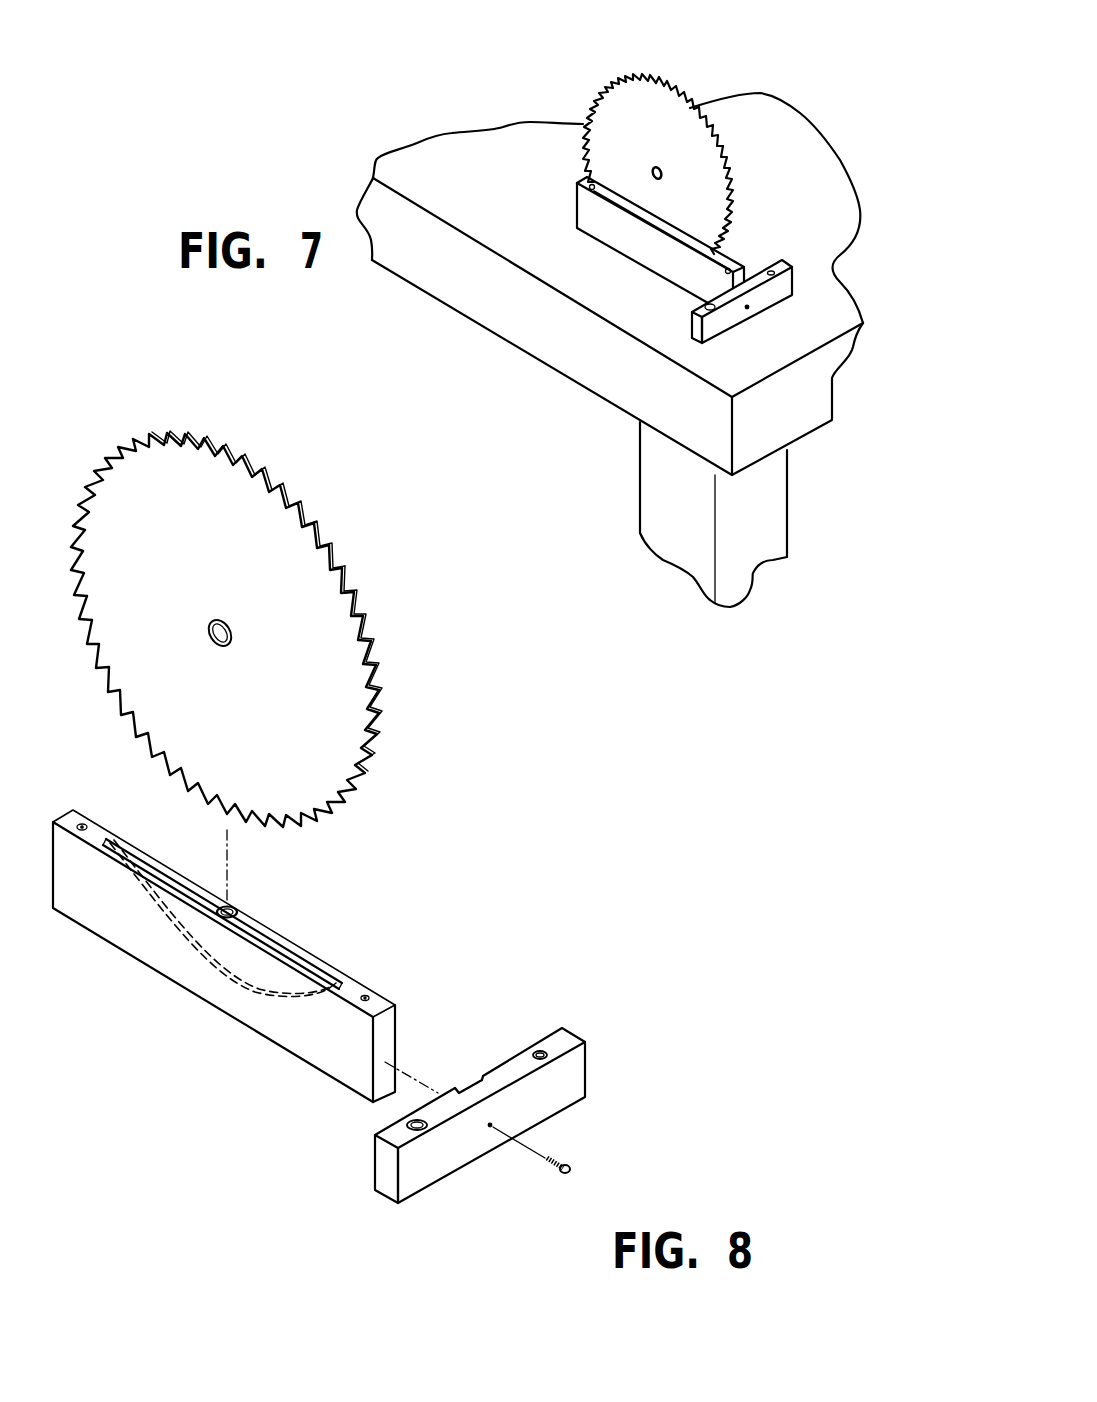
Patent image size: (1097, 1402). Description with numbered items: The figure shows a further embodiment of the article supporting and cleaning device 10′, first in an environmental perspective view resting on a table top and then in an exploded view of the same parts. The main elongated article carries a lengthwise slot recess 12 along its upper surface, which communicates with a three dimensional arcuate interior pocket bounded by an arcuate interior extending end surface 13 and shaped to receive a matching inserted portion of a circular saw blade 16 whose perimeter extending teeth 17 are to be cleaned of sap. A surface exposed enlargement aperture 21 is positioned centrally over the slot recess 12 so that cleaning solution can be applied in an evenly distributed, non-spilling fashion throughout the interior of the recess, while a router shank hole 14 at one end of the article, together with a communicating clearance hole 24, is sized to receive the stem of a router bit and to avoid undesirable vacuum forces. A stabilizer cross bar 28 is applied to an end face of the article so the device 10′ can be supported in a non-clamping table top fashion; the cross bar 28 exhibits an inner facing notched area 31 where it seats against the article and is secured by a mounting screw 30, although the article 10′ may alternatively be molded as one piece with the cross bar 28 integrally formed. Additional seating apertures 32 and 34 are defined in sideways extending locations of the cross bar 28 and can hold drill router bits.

In FIG. 7, the article supporting and cleaning device 10′ is at (535, 200).
In FIG. 8, the article supporting and cleaning device 10′ is at (125, 993).
In FIG. 7, the slot recess 12 is at (657, 230).
In FIG. 8, the slot recess 12 is at (289, 938).
In FIG. 8, the arcuate interior extending end surface 13 is at (243, 989).
In FIG. 8, the router shank hole 14 is at (84, 822).
In FIG. 7, the circular saw blade 16 is at (662, 110).
In FIG. 8, the circular saw blade 16 is at (305, 558).
In FIG. 7, the teeth 17 is at (625, 78).
In FIG. 8, the teeth 17 is at (236, 452).
In FIG. 8, the surface exposed enlargement aperture 21 is at (230, 906).
In FIG. 8, the clearance hole 24 is at (366, 996).
In FIG. 7, the stabilizer cross bar 28 is at (788, 287).
In FIG. 8, the stabilizer cross bar 28 is at (585, 1072).
In FIG. 7, the mounting screw 30 is at (747, 309).
In FIG. 8, the mounting screw 30 is at (560, 1155).
In FIG. 8, the inner facing notched area 31 is at (470, 1088).
In FIG. 7, the seating aperture 32 is at (771, 273).
In FIG. 8, the seating aperture 32 is at (538, 1050).
In FIG. 7, the seating aperture 34 is at (710, 307).
In FIG. 8, the seating aperture 34 is at (415, 1119).